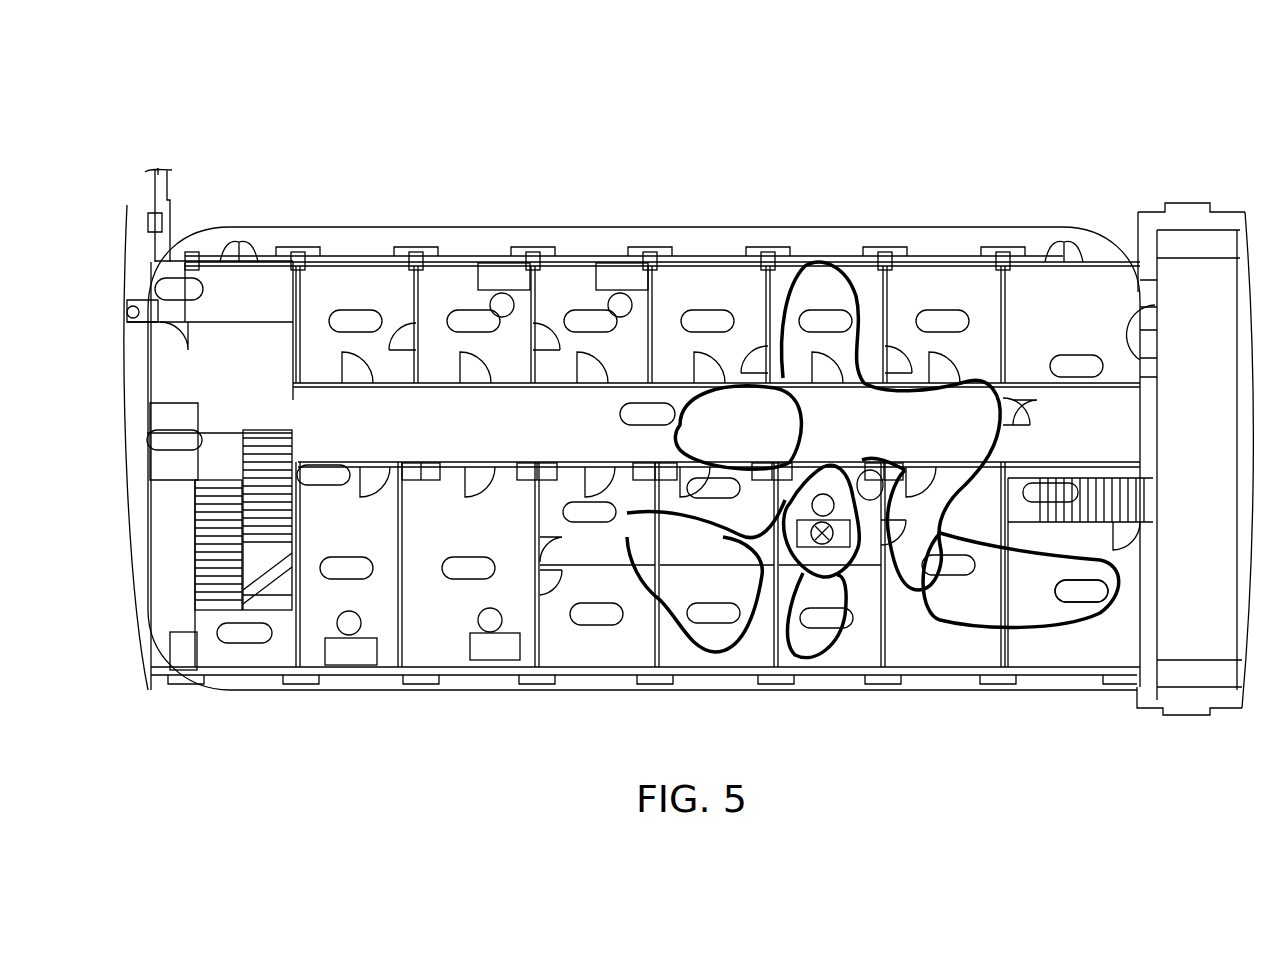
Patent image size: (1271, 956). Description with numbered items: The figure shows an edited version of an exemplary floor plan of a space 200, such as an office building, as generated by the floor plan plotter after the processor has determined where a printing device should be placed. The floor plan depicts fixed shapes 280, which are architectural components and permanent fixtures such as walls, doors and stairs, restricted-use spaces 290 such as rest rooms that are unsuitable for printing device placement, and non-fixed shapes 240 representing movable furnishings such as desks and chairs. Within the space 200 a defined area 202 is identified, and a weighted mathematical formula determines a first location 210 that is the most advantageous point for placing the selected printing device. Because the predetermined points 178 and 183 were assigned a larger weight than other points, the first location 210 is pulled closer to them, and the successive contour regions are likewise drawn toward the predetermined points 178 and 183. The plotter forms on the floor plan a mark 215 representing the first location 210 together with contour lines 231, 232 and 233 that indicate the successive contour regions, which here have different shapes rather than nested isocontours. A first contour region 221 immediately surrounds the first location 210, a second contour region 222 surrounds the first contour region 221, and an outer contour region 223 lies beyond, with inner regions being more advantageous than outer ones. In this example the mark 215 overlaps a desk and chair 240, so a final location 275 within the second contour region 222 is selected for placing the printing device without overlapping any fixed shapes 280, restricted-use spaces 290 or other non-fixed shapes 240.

The space 200 is at (208, 102).
The defined area 202 is at (918, 227).
The predetermined point 178 is at (830, 305).
The predetermined point 183 is at (1080, 603).
The first location 210 is at (762, 583).
The mark 215 is at (820, 545).
The first contour region 221 is at (860, 475).
The second contour region 222 is at (1025, 572).
The third contour region 223 is at (1045, 585).
The contour line 231 is at (829, 484).
The contour line 232 is at (924, 546).
The contour line 233 is at (1012, 557).
The non-fixed shape 240 is at (497, 262).
The final location 275 is at (898, 478).
The fixed shape 280 is at (1007, 342).
The restricted-use space 290 is at (250, 298).